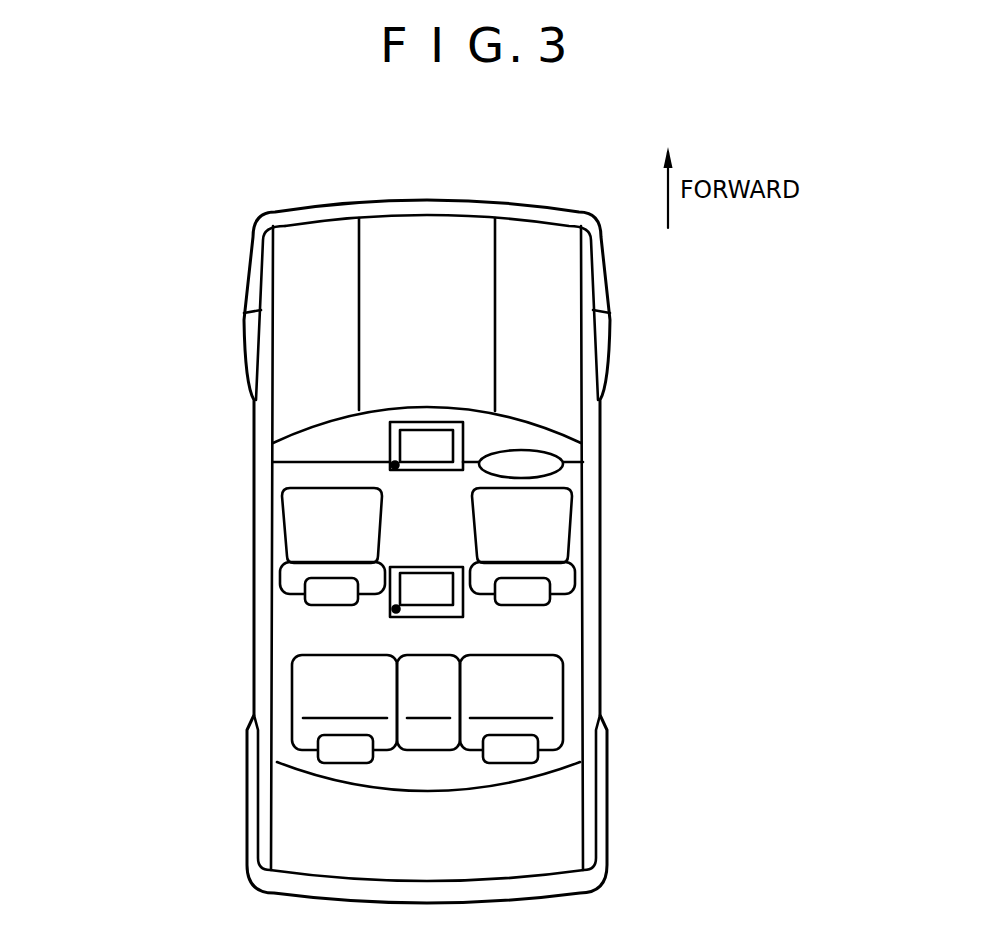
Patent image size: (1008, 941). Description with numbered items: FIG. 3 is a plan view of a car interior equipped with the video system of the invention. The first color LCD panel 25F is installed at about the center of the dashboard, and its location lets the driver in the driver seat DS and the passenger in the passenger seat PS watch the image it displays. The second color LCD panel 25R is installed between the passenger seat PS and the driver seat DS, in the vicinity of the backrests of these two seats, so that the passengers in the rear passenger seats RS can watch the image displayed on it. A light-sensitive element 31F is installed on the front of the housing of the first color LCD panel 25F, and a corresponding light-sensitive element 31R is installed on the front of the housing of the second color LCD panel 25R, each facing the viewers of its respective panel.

The first color LCD panel 25F is at (463, 432).
The second color LCD panel 25R is at (450, 617).
The light-sensitive element 31F is at (392, 466).
The light-sensitive element 31R is at (393, 610).
The passenger seat PS is at (281, 525).
The driver seat DS is at (573, 518).
The rear passenger seats RS is at (291, 712).